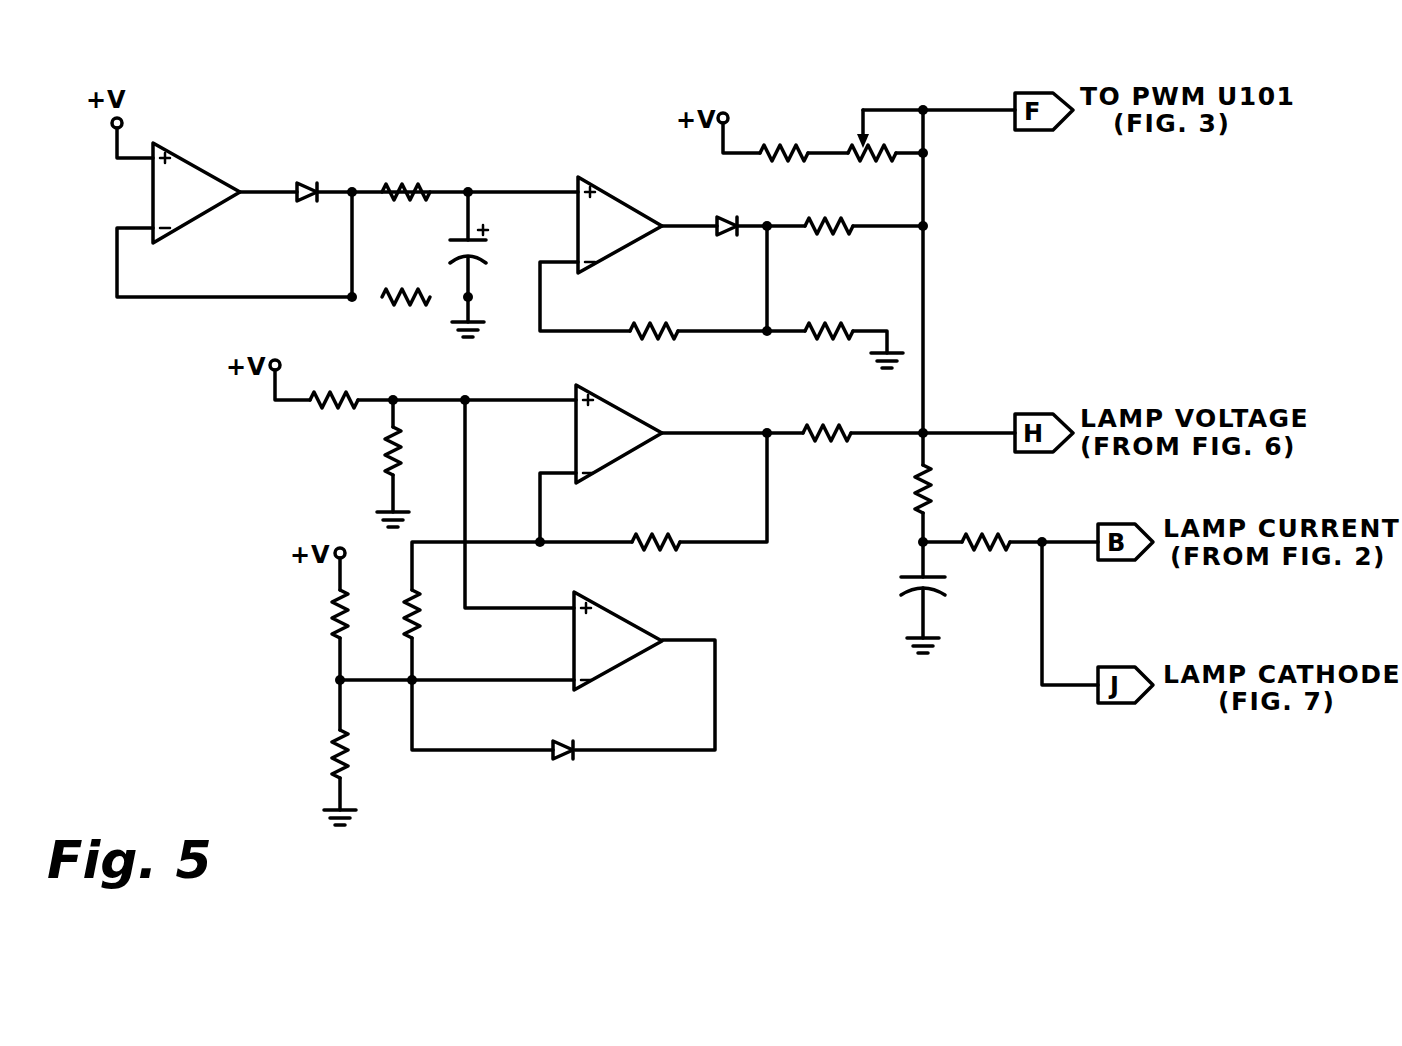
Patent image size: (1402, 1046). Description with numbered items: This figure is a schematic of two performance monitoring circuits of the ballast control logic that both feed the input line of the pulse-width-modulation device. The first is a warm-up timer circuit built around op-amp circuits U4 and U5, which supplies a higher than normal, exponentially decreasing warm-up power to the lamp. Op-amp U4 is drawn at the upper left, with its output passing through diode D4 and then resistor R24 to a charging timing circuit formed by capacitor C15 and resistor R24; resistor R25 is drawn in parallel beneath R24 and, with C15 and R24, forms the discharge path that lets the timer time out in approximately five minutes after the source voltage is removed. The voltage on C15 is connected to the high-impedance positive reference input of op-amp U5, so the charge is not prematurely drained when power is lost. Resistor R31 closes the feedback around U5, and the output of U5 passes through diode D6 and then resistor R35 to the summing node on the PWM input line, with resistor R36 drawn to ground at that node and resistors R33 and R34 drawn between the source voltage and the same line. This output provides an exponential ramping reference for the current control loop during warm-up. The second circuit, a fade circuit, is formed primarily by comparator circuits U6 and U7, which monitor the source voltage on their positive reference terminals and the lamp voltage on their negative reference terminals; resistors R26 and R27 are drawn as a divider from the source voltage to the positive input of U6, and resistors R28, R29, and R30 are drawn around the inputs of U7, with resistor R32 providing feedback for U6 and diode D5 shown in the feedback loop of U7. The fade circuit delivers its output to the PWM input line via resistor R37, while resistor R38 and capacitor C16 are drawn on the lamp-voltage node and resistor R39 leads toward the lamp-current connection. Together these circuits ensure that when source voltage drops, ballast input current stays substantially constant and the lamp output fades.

The op-amp circuit U4 is at (196, 193).
The op-amp circuit U5 is at (620, 225).
The comparator circuit U6 is at (619, 434).
The comparator circuit U7 is at (618, 641).
The diode D4 is at (313, 182).
The diode D5 is at (566, 762).
The diode D6 is at (732, 216).
The capacitor C15 is at (496, 243).
The capacitor C16 is at (906, 597).
The resistor R24 is at (413, 187).
The resistor R25 is at (400, 306).
The resistor R26 is at (322, 396).
The resistor R27 is at (386, 457).
The resistor R28 is at (328, 624).
The resistor R29 is at (330, 755).
The resistor R30 is at (420, 624).
The resistor R31 is at (660, 326).
The resistor R32 is at (650, 538).
The resistor R33 is at (790, 146).
The potentiometer R34 is at (860, 160).
The resistor R35 is at (820, 236).
The resistor R36 is at (827, 346).
The resistor R37 is at (823, 444).
The resistor R38 is at (933, 486).
The resistor R39 is at (985, 553).